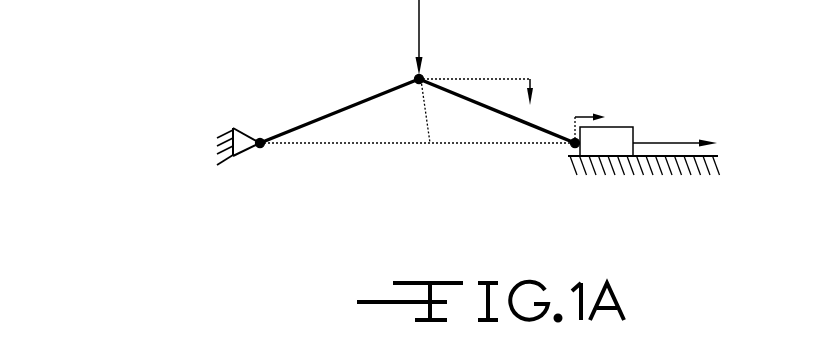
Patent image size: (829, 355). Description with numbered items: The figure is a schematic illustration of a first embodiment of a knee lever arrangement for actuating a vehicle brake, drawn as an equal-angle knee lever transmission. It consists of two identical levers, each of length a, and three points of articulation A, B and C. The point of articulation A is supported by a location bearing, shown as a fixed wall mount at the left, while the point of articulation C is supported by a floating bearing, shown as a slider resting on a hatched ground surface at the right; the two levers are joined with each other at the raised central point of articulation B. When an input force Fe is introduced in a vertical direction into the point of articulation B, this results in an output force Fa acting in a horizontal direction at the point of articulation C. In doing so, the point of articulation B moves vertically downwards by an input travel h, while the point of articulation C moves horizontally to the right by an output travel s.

The point of articulation A is at (248, 146).
The point of articulation B is at (417, 109).
The point of articulation C is at (637, 151).
The length a is at (417, 111).
The input travel h is at (486, 95).
The output travel s is at (590, 112).
The input force Fe is at (407, 37).
The output force Fa is at (675, 128).